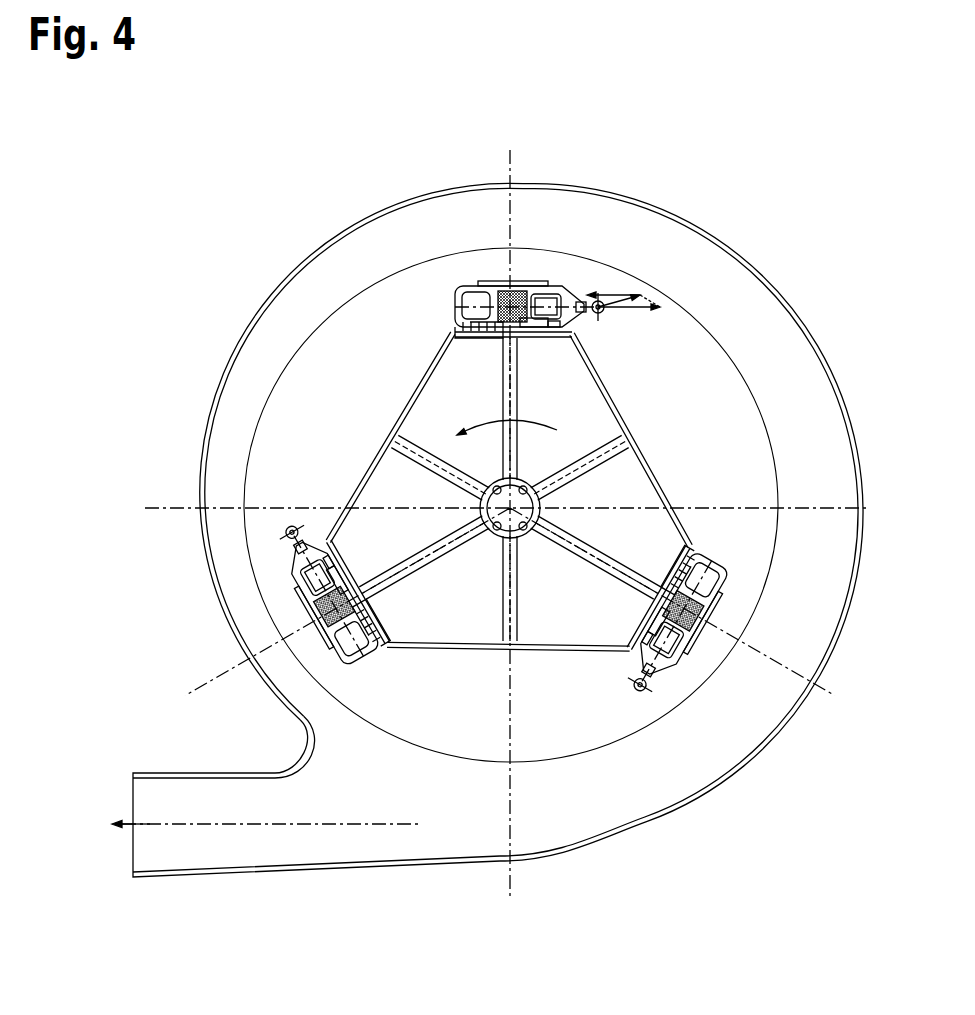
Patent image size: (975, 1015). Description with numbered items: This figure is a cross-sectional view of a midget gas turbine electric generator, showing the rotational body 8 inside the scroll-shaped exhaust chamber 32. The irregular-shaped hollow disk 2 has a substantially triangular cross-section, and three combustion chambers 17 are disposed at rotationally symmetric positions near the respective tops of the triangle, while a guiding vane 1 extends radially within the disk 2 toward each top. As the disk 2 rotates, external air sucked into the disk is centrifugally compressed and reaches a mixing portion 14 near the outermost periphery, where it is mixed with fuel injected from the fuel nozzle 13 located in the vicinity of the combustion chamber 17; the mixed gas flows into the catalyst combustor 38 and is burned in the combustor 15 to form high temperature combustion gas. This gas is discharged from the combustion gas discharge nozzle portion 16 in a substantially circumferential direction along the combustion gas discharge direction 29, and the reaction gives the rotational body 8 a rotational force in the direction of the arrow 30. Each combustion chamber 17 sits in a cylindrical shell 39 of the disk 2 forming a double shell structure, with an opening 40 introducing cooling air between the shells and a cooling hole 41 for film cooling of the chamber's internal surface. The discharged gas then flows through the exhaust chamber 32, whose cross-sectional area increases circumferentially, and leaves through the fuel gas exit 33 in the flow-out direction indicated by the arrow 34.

The guiding vane 1 is at (510, 396).
The irregular-shaped hollow disk 2 is at (663, 482).
The rotational body 8 is at (551, 648).
The fuel nozzle 13 is at (455, 298).
The mixing portion 14 is at (477, 303).
The combustor 15 is at (556, 297).
The combustion gas discharge nozzle portion 16 is at (575, 328).
The combustion chamber 17 is at (488, 287).
The combustion gas discharge direction 29 is at (627, 310).
The arrow indicating rotational direction 30 is at (507, 443).
The exhaust chamber 32 is at (793, 312).
The fuel gas exit 33 is at (133, 800).
The flow direction 34 is at (132, 832).
The catalyst combustor 38 is at (508, 294).
The cylindrical shell 39 is at (548, 330).
The opening 40 is at (527, 333).
The cooling hole 41 is at (536, 293).